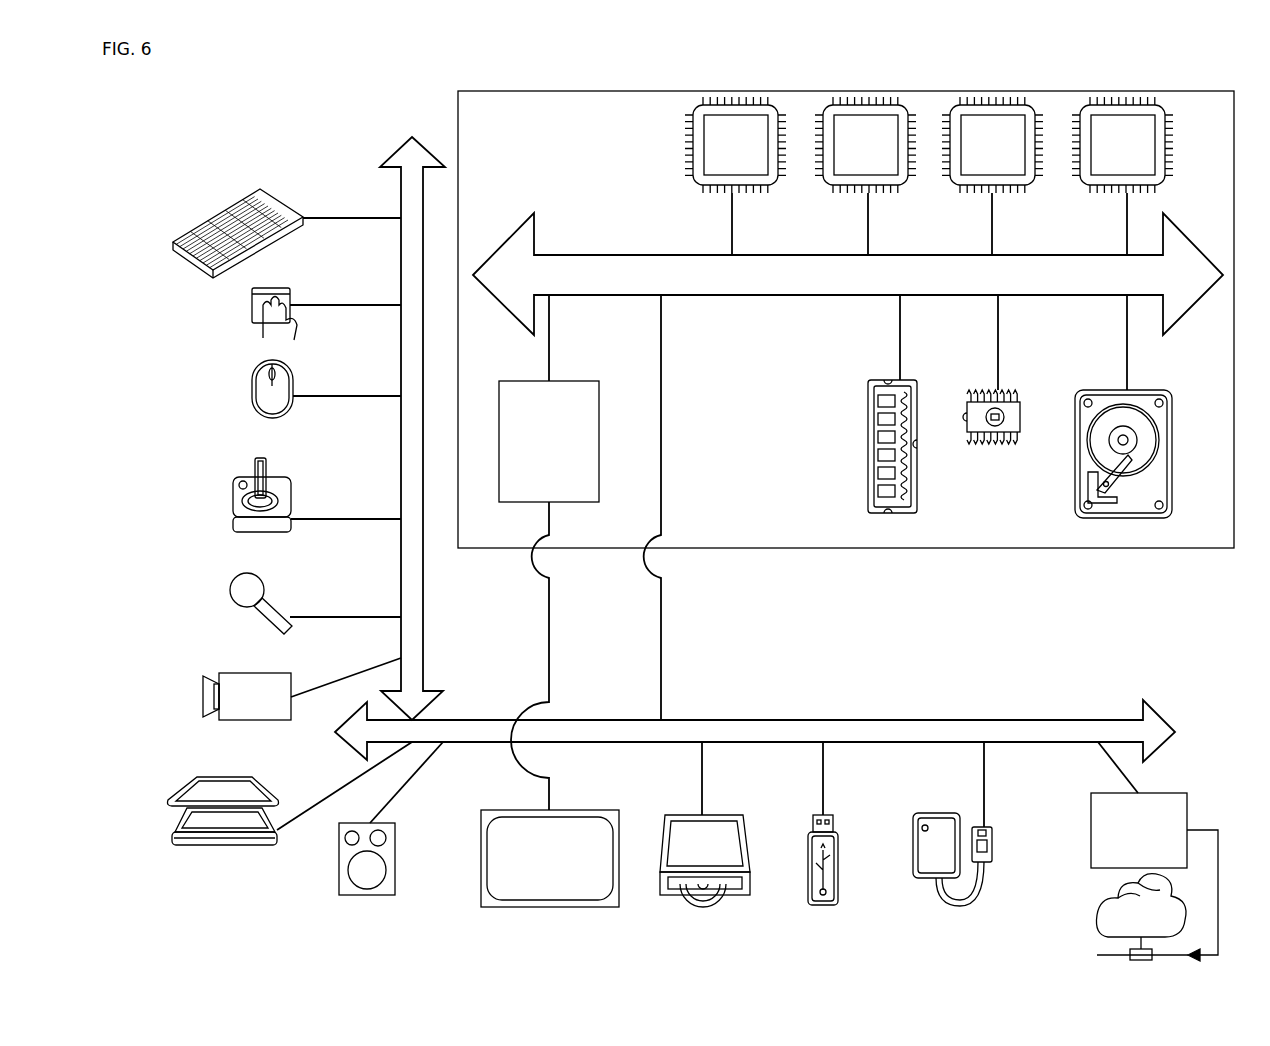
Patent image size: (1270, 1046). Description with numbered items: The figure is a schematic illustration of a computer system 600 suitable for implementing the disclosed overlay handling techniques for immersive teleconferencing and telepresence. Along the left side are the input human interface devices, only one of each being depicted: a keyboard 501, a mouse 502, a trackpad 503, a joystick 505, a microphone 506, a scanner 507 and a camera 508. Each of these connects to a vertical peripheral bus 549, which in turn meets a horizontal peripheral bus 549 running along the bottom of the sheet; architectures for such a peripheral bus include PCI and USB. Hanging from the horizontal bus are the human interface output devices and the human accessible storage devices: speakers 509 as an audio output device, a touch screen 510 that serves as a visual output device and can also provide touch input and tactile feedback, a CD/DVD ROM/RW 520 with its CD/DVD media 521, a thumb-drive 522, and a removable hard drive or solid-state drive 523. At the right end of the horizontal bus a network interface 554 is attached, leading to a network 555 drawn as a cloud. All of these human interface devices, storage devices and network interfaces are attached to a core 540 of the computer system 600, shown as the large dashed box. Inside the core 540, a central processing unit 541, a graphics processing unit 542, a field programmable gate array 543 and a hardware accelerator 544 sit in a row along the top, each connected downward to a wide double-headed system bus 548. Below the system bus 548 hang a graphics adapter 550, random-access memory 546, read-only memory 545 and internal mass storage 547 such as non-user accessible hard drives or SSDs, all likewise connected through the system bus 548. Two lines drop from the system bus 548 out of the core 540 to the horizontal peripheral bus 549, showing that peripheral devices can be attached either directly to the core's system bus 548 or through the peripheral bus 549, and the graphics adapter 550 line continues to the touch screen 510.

The computer system 600 is at (672, 515).
The keyboard 501 is at (174, 243).
The mouse 502 is at (245, 386).
The trackpad 503 is at (250, 314).
The joystick 505 is at (232, 515).
The microphone 506 is at (232, 587).
The scanner 507 is at (174, 831).
The camera 508 is at (207, 695).
The speakers 509 is at (368, 895).
The touch screen 510 is at (547, 907).
The CD/DVD ROM/RW 520 is at (744, 895).
The CD/DVD media 521 is at (722, 886).
The thumb-drive 522 is at (822, 905).
The removable hard drive or solid-state drive 523 is at (913, 880).
The core 540 is at (840, 548).
The central processing unit 541 is at (735, 145).
The graphics processing unit 542 is at (865, 145).
The field programmable gate array 543 is at (992, 145).
The hardware accelerator 544 is at (1122, 145).
The read-only memory 545 is at (988, 446).
The random-access memory 546 is at (868, 458).
The internal mass storage 547 is at (1096, 390).
The system bus 548 is at (848, 274).
The peripheral bus 549 is at (401, 172).
The graphics adapter 550 is at (549, 441).
The network interface 554 is at (1139, 830).
The network 555 is at (1098, 923).